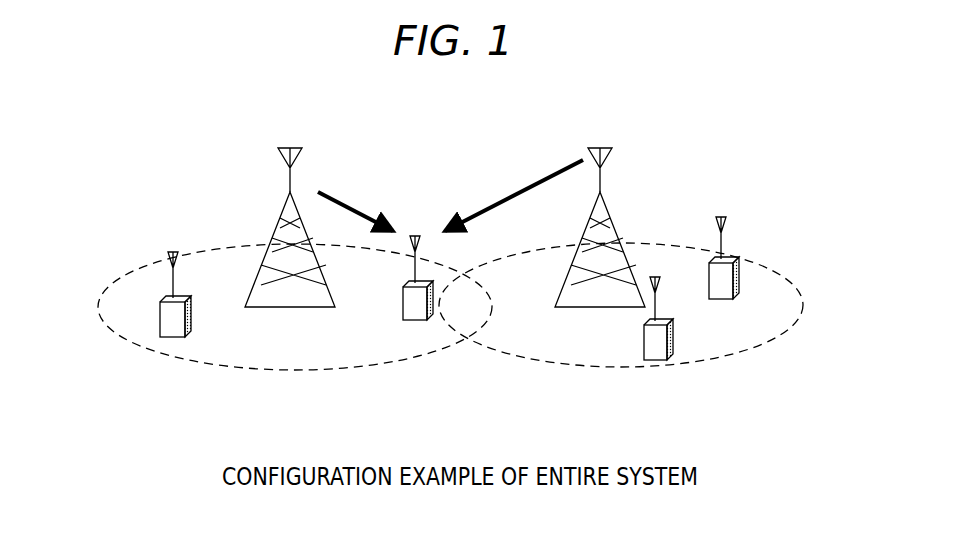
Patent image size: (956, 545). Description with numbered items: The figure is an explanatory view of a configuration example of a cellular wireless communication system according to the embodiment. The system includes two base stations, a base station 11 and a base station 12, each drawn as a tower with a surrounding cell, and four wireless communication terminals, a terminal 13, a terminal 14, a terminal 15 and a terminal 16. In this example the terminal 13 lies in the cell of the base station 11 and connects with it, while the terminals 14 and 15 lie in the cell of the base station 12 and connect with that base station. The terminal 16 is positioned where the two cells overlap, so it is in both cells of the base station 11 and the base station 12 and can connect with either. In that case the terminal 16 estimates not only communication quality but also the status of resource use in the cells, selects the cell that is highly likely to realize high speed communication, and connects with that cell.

The base station 11 is at (308, 178).
The base station 12 is at (620, 198).
The wireless communication terminal 13 is at (188, 336).
The wireless communication terminal 14 is at (670, 358).
The wireless communication terminal 15 is at (738, 280).
The wireless communication terminal 16 is at (431, 316).